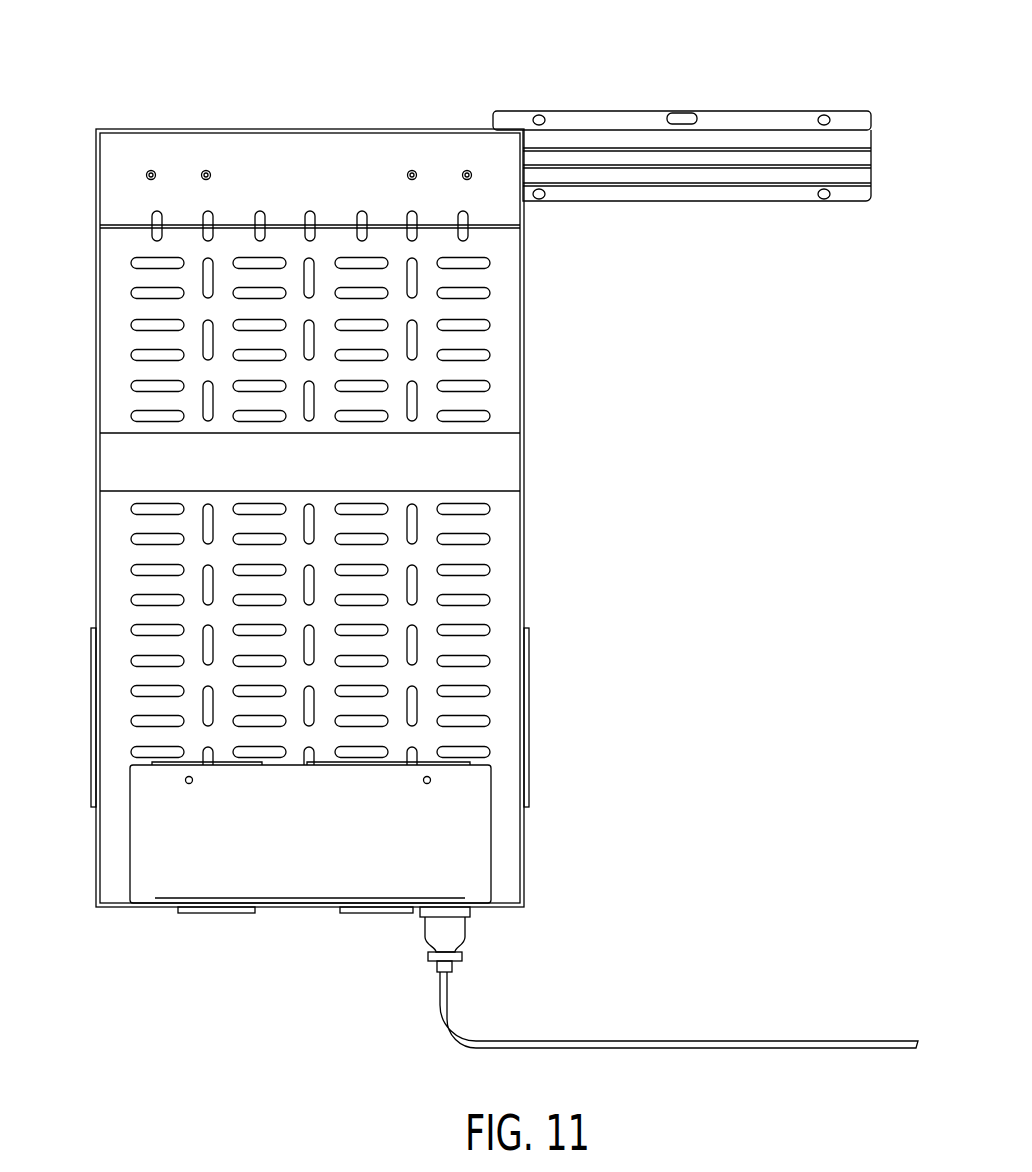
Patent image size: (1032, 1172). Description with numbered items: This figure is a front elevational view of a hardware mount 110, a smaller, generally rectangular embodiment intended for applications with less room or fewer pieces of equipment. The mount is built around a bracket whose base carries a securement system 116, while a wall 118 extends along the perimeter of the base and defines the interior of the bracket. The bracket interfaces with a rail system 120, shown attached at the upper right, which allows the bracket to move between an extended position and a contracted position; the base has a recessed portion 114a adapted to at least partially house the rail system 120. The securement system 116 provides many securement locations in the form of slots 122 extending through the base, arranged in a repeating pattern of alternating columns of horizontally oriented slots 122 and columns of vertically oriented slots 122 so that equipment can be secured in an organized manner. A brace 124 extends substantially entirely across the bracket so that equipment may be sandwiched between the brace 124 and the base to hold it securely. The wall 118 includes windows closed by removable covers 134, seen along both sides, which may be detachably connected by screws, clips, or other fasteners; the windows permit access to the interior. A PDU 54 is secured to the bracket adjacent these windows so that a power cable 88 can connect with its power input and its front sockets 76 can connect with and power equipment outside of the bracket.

The hardware mount 110 is at (147, 950).
The recessed portion 114a is at (185, 152).
The securement system 116 is at (240, 256).
The wall 118 is at (523, 366).
The rail system 120 is at (489, 83).
The slots 122 is at (413, 586).
The brace 124 is at (506, 470).
The removable covers 134 is at (92, 703).
The PDU 54 is at (283, 877).
The front sockets 76 is at (188, 915).
The power cable 88 is at (810, 1045).